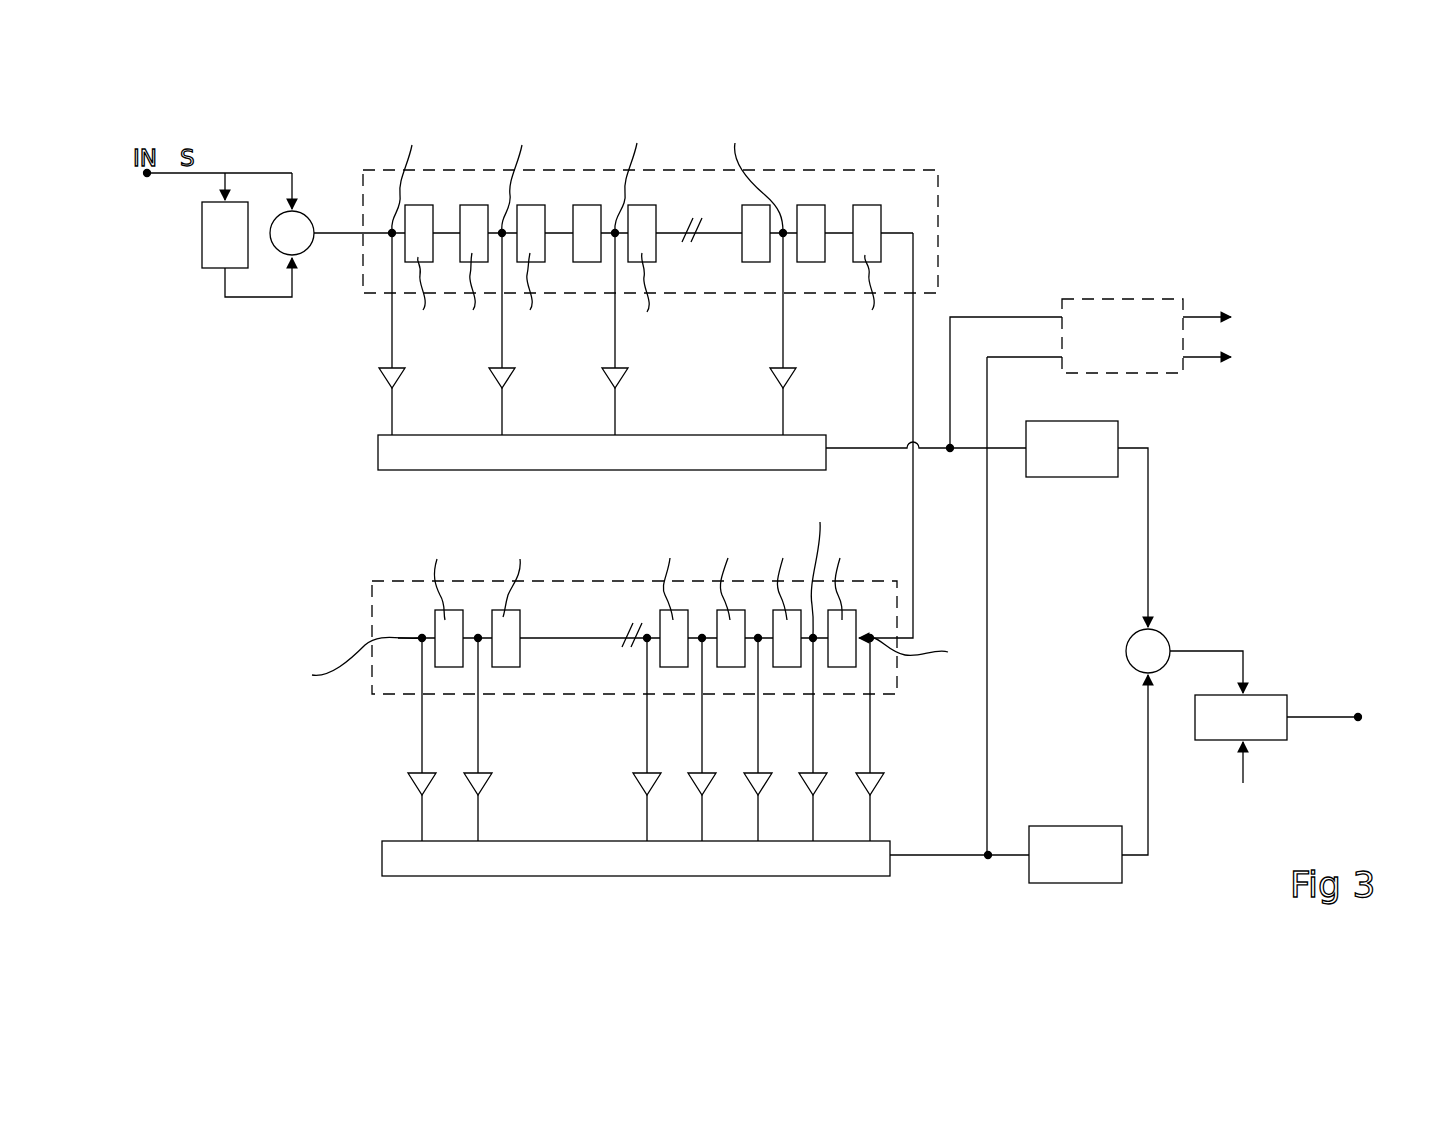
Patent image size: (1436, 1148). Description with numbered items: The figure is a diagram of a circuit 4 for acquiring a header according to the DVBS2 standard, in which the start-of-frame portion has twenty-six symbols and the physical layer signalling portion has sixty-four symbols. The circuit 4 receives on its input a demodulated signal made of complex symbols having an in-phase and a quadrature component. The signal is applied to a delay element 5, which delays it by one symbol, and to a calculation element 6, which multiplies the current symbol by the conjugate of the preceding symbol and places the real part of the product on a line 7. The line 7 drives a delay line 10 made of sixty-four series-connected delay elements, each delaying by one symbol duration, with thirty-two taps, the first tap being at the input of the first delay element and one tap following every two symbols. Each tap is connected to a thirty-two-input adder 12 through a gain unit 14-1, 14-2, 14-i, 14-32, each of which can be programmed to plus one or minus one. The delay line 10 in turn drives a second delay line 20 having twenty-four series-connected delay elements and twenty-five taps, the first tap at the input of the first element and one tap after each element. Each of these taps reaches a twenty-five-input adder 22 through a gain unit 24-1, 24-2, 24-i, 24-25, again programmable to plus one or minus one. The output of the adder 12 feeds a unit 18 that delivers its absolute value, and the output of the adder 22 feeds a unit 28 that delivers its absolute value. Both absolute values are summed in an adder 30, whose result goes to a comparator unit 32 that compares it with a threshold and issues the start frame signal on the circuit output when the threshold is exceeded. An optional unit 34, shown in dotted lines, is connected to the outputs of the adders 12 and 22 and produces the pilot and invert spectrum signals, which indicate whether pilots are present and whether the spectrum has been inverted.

The circuit 4 is at (1120, 165).
The delay element 5 is at (217, 238).
The calculation element 6 is at (300, 229).
The line 7 is at (336, 232).
The delay line 10 is at (795, 169).
The 32-input adder 12 is at (395, 452).
The gain unit 14-1 is at (387, 377).
The gain unit 14-2 is at (497, 375).
The gain unit 14-i is at (618, 373).
The gain unit 14-32 is at (787, 373).
The absolute value unit 18 is at (1047, 465).
The delay line 20 is at (370, 618).
The 25-input adder 22 is at (395, 861).
The gain unit 24-25 is at (417, 780).
The gain unit 24-i is at (697, 782).
The gain unit 24-2 is at (808, 782).
The gain unit 24-1 is at (866, 782).
The absolute value unit 28 is at (1065, 825).
The adder 30 is at (1157, 627).
The comparator unit 32 is at (1257, 705).
The unit 34 is at (1118, 298).